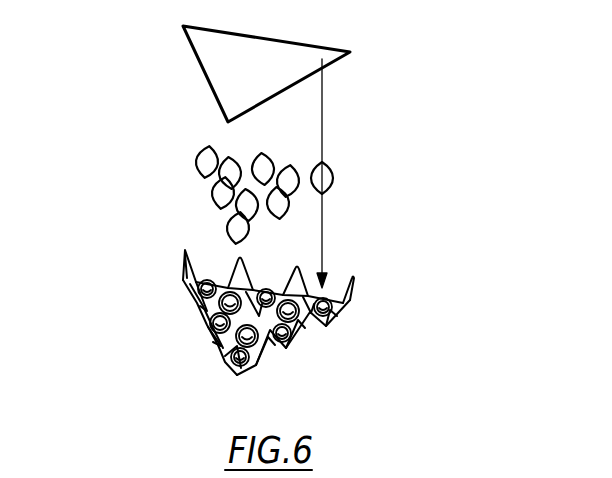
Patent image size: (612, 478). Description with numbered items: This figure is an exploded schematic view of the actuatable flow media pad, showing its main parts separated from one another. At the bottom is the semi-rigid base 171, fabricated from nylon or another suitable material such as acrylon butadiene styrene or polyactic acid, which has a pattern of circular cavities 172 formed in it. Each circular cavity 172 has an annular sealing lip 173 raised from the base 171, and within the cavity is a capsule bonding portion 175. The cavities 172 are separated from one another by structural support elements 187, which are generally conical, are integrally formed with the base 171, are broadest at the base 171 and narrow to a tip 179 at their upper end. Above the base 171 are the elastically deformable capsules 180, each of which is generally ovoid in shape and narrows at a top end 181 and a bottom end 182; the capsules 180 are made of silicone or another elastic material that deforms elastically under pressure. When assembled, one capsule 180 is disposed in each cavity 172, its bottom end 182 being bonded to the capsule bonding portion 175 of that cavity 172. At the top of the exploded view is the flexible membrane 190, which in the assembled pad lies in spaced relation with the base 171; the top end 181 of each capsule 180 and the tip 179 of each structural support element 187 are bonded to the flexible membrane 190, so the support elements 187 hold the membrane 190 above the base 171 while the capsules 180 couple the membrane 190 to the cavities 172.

The flexible membrane 190 is at (201, 67).
The capsule 180 is at (213, 204).
The top end 181 is at (323, 159).
The bottom end 182 is at (322, 196).
The tip 179 is at (256, 283).
The capsule bonding portion 175 is at (348, 302).
The structural support element 187 is at (190, 288).
The annular sealing lip 173 is at (328, 324).
The circular cavity 172 is at (293, 343).
The base 171 is at (205, 327).